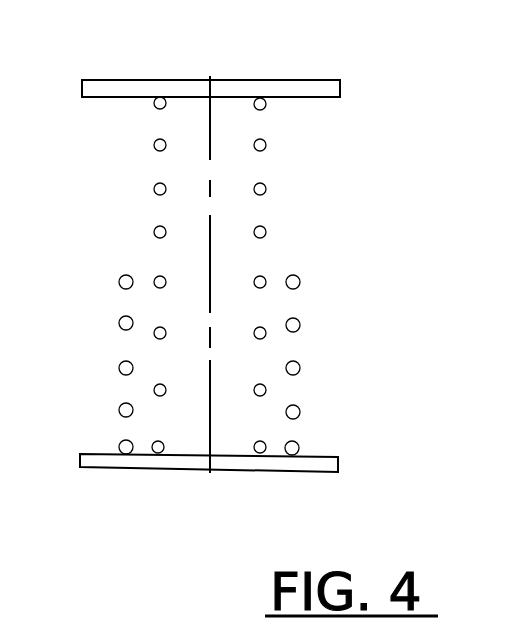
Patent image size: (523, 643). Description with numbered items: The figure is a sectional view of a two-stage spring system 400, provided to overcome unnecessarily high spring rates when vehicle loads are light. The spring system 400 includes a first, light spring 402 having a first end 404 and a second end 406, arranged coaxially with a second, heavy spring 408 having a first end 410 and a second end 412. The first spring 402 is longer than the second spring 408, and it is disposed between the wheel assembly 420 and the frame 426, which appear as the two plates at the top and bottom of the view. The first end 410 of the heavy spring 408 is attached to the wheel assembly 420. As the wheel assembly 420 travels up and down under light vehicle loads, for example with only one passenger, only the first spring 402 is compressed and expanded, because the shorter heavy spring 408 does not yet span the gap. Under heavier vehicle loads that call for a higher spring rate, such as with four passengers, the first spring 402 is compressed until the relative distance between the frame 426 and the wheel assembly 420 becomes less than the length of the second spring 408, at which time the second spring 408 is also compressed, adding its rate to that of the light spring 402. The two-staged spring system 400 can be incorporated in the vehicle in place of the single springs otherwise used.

The two-stage spring system 400 is at (325, 160).
The first, light spring 402 is at (268, 189).
The first end 404 is at (148, 455).
The second end 406 is at (262, 90).
The second, heavy spring 408 is at (300, 324).
The first end 410 is at (300, 447).
The second end 412 is at (297, 268).
The wheel assembly 420 is at (80, 462).
The frame 426 is at (135, 82).